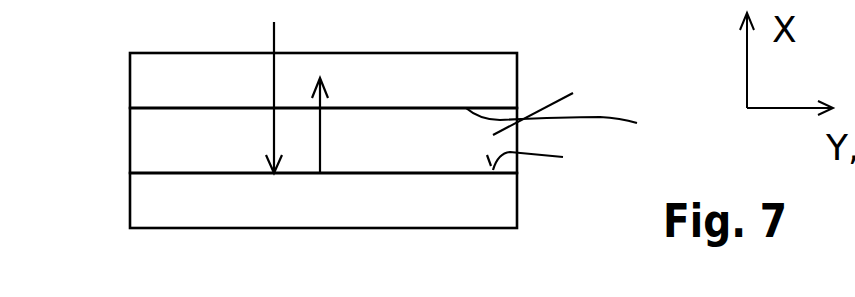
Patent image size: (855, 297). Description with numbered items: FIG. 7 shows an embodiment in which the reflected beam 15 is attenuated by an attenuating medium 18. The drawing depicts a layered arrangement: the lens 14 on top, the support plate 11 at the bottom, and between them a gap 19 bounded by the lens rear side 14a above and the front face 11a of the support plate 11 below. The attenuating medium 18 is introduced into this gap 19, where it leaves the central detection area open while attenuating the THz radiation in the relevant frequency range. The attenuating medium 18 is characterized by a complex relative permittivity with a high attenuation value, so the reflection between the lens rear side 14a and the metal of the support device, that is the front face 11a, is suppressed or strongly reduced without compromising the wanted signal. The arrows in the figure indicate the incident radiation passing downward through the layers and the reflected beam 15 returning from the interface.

The support plate 11 is at (148, 205).
The front face of the support plate 11a is at (556, 158).
The lens 14 is at (145, 78).
The lens rear side 14a is at (560, 105).
The reflected beam 15 is at (256, 91).
The attenuating medium 18 is at (160, 143).
The gap 19 is at (574, 122).